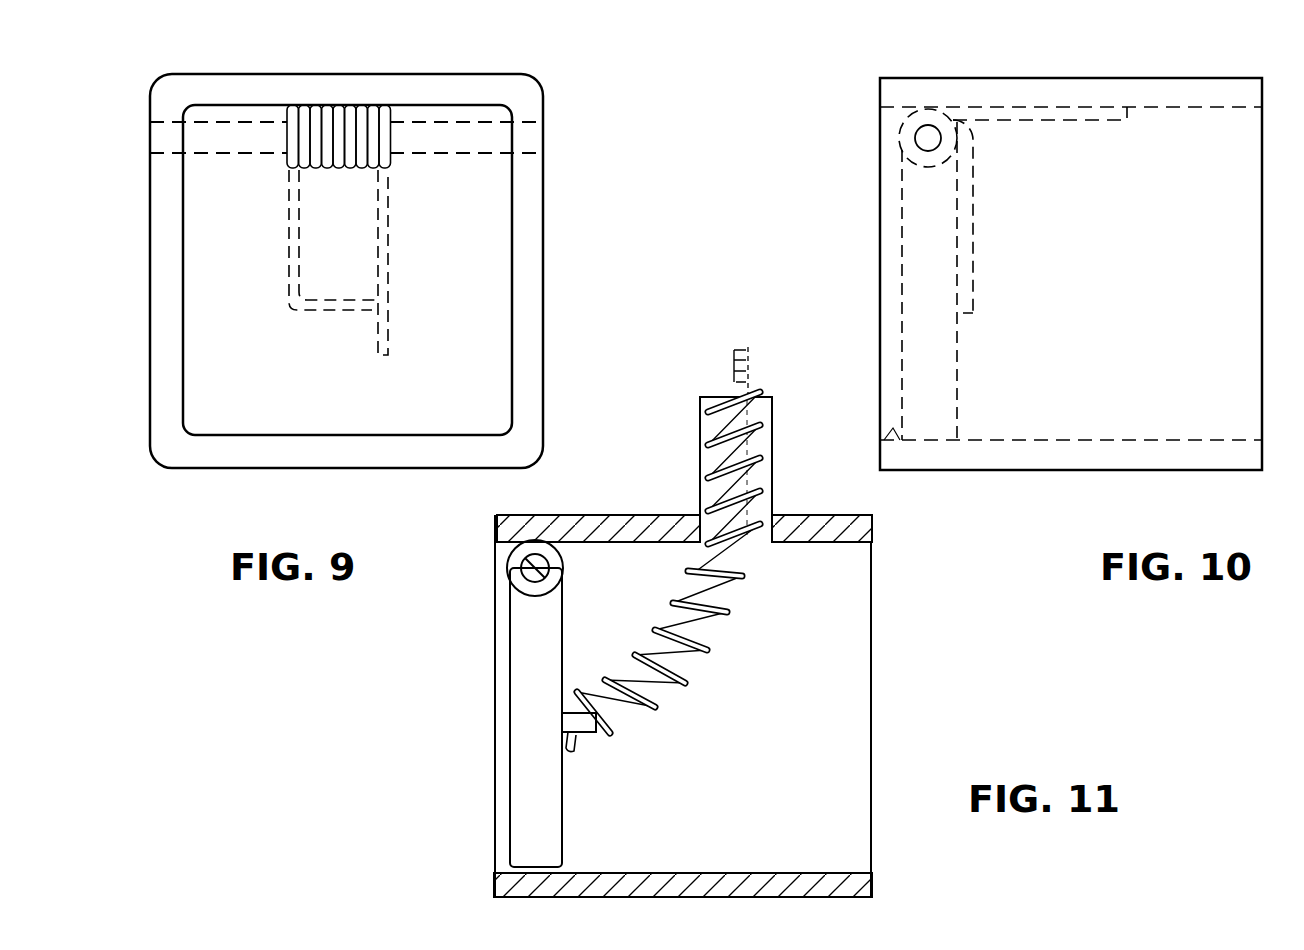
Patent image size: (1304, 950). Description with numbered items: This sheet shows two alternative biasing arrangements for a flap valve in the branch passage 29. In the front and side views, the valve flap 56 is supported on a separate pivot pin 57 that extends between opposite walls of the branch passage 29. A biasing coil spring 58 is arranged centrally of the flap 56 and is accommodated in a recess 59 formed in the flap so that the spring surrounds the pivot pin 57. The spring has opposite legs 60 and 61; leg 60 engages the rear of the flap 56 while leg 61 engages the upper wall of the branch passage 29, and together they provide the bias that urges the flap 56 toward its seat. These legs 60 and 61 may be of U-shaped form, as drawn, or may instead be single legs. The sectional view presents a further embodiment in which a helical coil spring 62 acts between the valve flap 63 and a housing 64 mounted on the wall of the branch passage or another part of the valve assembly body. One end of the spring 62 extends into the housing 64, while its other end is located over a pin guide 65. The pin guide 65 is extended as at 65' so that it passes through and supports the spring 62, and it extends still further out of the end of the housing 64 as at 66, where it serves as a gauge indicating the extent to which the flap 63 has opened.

In FIG. 9, the branch passage 29 is at (482, 405).
In FIG. 9, the valve flap 56 is at (503, 217).
In FIG. 9, the pivot pin 57 is at (157, 143).
In FIG. 10, the pivot pin 57 is at (923, 140).
In FIG. 9, the biasing coil spring 58 is at (270, 180).
In FIG. 9, the recess 59 is at (400, 106).
In FIG. 9, the spring leg 60 is at (278, 258).
In FIG. 10, the spring leg 60 is at (963, 243).
In FIG. 10, the spring leg 61 is at (1070, 113).
In FIG. 11, the helical coil spring 62 is at (745, 630).
In FIG. 11, the valve flap 63 is at (518, 666).
In FIG. 11, the housing 64 is at (700, 492).
In FIG. 11, the pin guide 65 is at (525, 737).
In FIG. 11, the pin guide extension 65' is at (759, 652).
In FIG. 11, the gauge extension 66 is at (753, 377).